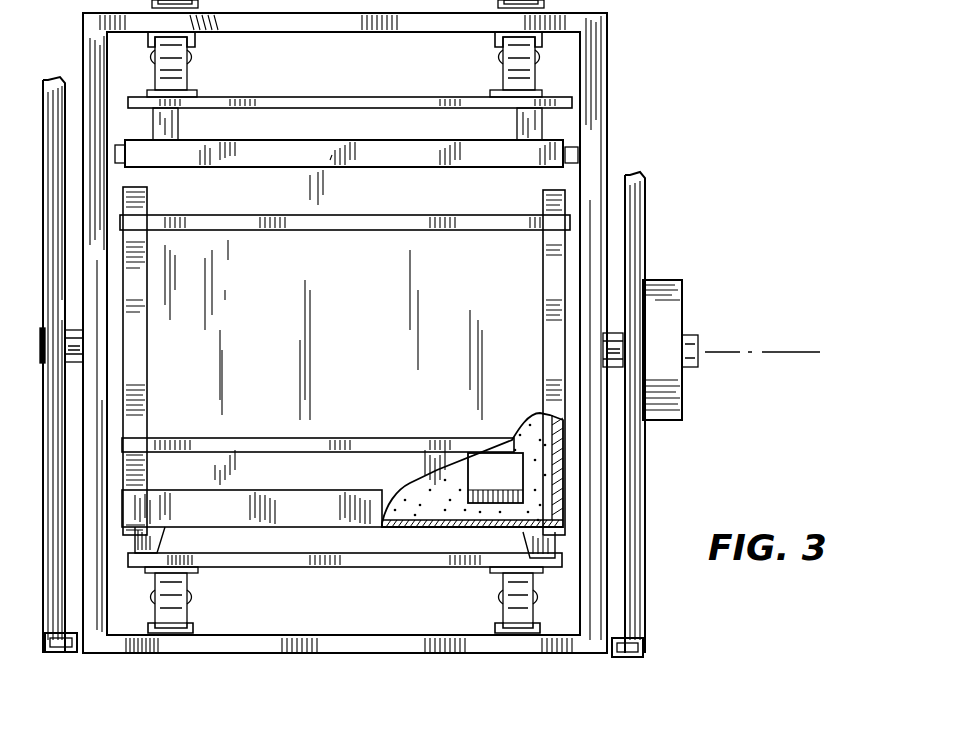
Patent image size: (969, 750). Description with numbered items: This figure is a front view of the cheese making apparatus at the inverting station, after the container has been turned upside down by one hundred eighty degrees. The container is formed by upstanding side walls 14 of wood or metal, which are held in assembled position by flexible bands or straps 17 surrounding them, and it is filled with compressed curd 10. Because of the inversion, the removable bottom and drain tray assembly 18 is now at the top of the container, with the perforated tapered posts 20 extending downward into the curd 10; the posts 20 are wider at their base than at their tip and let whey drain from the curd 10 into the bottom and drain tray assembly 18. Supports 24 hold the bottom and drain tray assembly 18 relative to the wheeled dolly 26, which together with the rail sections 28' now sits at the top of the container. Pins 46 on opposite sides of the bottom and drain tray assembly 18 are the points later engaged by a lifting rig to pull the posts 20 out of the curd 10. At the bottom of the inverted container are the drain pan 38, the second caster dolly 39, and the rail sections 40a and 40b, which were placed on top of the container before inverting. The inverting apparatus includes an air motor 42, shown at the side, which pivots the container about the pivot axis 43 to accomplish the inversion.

The curd 10 is at (442, 501).
The side walls 14 is at (348, 356).
The flexible bands or straps 17 is at (303, 231).
The bottom and drain tray assembly 18 is at (395, 176).
The upstanding perforated tapered posts 20 is at (512, 484).
The supports 24 is at (180, 122).
The wheeled dolly 26 is at (333, 97).
The rail sections 28' is at (344, 65).
The drain pan 38 is at (565, 518).
The second caster dolly 39 is at (412, 567).
The rail section 40a is at (197, 626).
The rail section 40b is at (495, 628).
The air motor 42 is at (682, 403).
The pivot axis 43 is at (785, 352).
The pins 46 is at (120, 165).